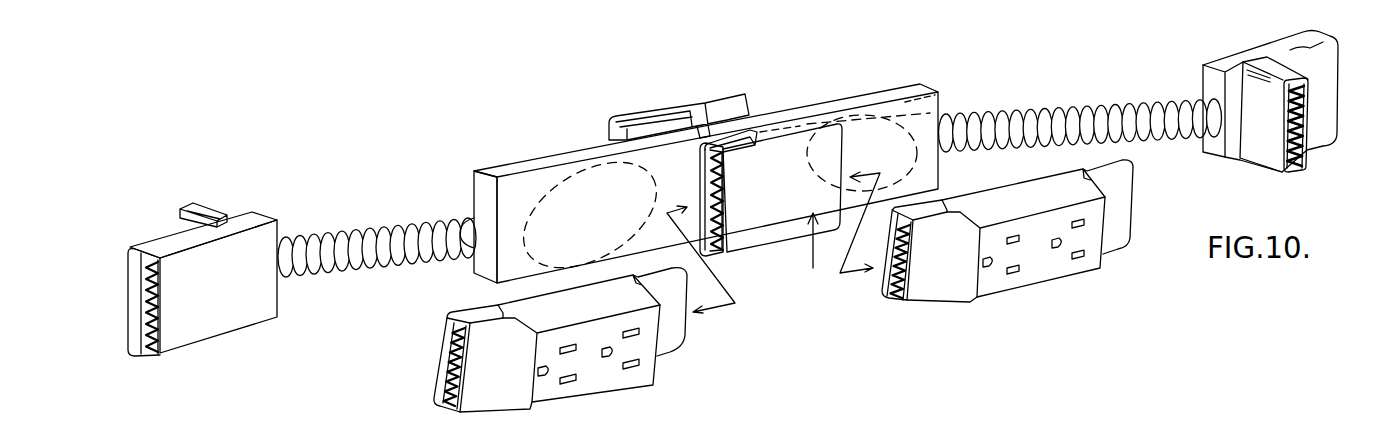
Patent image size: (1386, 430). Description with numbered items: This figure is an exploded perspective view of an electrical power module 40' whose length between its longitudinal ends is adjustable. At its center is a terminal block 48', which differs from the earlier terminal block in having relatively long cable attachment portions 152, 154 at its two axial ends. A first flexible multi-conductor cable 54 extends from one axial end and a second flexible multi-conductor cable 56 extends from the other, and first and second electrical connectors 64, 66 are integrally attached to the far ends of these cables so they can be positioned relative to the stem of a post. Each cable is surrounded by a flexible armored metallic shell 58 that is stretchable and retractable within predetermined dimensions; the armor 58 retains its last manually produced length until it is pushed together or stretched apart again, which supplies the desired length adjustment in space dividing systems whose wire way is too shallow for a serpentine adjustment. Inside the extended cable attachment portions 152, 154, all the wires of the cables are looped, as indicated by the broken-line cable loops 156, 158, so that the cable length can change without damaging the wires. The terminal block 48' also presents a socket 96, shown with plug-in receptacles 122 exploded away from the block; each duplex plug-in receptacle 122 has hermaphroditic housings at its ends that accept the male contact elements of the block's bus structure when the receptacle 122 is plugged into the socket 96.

The electrical power module 40' is at (727, 173).
The terminal block 48' is at (679, 99).
The first flexible multi-conductor cable 54 is at (440, 217).
The second flexible multi-conductor cable 56 is at (1152, 97).
The flexible armored metallic shell 58 is at (360, 230).
The first electrical connector 64 is at (240, 187).
The second electrical connector 66 is at (1235, 50).
The first socket 96 is at (745, 204).
The plug-in receptacle 122 is at (613, 383).
The cable attachment portion 152 is at (570, 153).
The cable attachment portion 154 is at (895, 88).
The cable loop 156 is at (556, 190).
The cable loop 158 is at (945, 95).